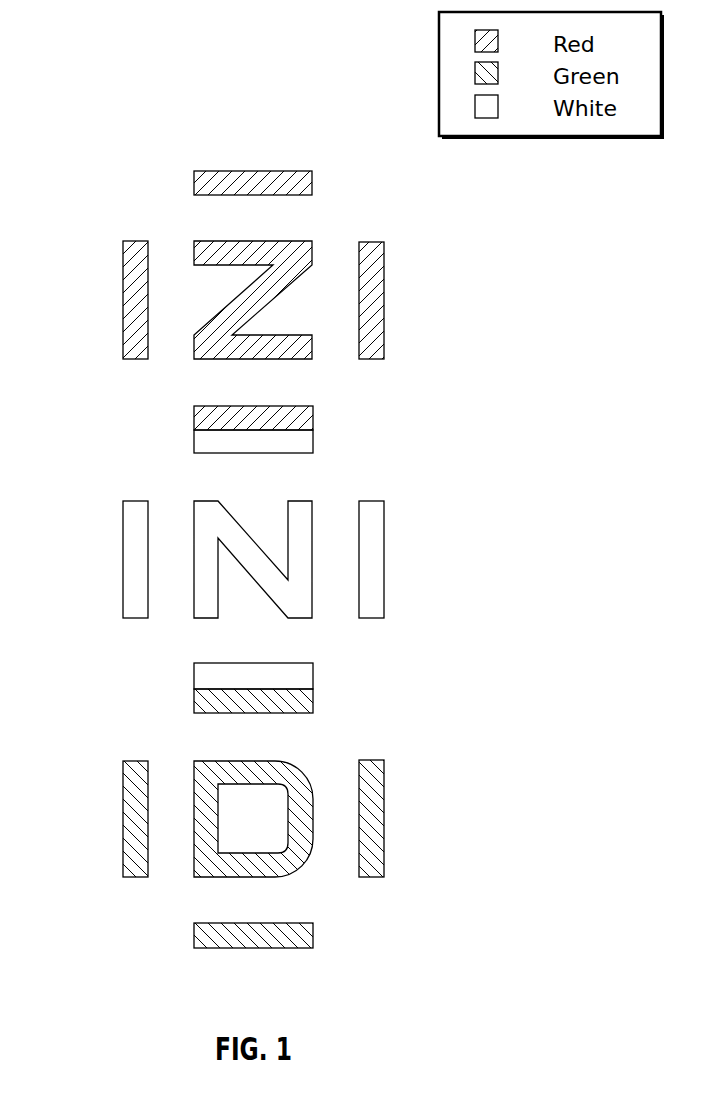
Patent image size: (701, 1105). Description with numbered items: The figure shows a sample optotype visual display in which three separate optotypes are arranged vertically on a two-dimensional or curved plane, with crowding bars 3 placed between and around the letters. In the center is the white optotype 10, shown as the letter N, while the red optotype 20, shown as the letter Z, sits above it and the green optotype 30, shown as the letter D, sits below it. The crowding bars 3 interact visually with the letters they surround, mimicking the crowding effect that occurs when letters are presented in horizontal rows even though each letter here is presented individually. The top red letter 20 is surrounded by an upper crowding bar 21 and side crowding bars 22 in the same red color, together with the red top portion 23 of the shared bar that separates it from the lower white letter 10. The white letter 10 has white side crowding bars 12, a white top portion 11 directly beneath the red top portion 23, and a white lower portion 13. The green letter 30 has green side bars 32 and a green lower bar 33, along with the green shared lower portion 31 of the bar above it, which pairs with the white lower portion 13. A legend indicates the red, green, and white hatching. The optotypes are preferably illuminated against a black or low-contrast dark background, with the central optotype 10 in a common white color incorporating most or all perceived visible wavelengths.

The crowding bars 3 is at (116, 243).
The white optotype 10 is at (323, 503).
The top portion 11 is at (312, 450).
The side crowding bars 12 is at (123, 587).
The lower portion 13 is at (308, 657).
The red optotype 20 is at (316, 241).
The upper crowding bar 21 is at (214, 170).
The side crowding bars 22 is at (123, 323).
The top portion of the crowding bar 23 is at (312, 410).
The green optotype 30 is at (346, 747).
The shared portion of bar above 31 is at (297, 717).
The side bars 32 is at (113, 853).
The lower bar 33 is at (308, 948).